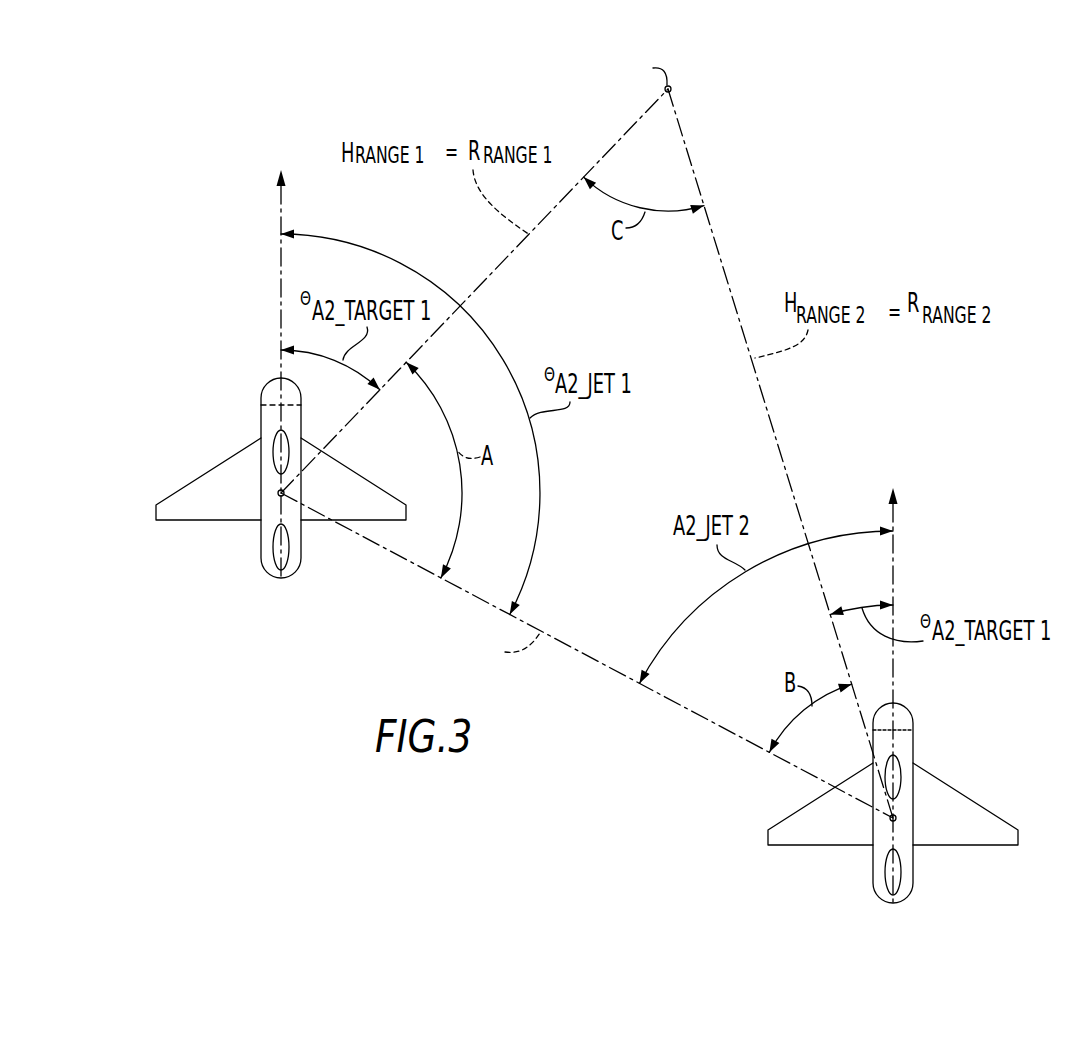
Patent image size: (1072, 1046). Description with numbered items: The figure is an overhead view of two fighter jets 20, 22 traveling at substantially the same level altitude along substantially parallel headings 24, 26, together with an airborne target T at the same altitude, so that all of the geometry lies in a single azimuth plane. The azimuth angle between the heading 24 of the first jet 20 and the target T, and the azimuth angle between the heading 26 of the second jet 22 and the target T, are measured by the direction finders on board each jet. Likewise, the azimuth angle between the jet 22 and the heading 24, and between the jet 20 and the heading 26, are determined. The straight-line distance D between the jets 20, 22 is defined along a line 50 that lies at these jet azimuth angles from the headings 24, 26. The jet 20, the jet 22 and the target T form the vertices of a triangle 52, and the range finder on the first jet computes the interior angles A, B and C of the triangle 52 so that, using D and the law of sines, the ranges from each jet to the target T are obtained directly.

The fighter jet 20 is at (263, 540).
The fighter jet 22 is at (875, 866).
The heading 24 is at (278, 258).
The heading 26 is at (900, 517).
The line 50 is at (578, 652).
The triangle 52 is at (797, 237).